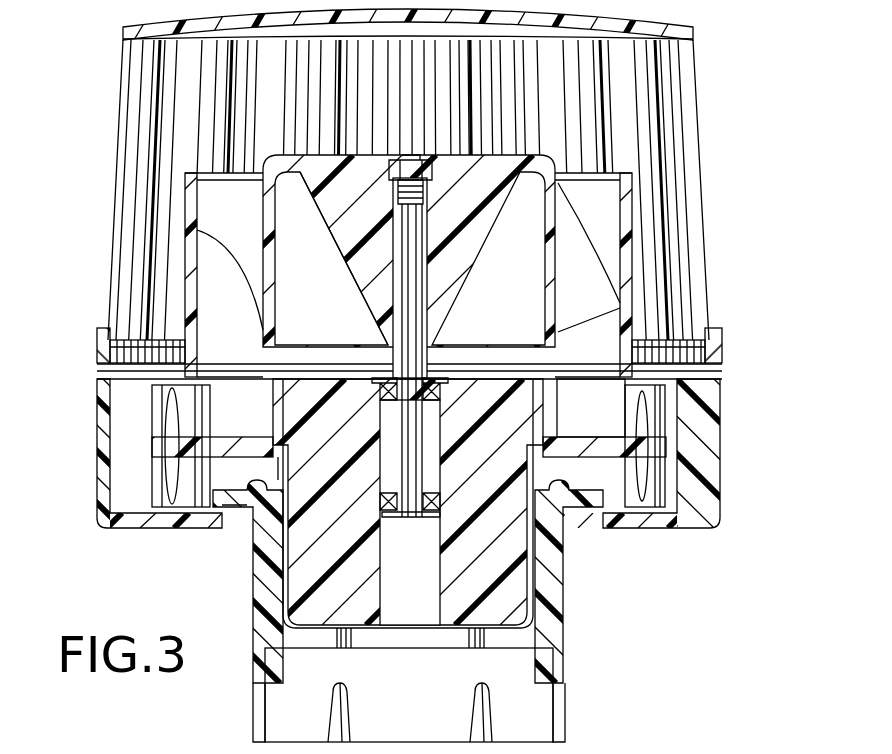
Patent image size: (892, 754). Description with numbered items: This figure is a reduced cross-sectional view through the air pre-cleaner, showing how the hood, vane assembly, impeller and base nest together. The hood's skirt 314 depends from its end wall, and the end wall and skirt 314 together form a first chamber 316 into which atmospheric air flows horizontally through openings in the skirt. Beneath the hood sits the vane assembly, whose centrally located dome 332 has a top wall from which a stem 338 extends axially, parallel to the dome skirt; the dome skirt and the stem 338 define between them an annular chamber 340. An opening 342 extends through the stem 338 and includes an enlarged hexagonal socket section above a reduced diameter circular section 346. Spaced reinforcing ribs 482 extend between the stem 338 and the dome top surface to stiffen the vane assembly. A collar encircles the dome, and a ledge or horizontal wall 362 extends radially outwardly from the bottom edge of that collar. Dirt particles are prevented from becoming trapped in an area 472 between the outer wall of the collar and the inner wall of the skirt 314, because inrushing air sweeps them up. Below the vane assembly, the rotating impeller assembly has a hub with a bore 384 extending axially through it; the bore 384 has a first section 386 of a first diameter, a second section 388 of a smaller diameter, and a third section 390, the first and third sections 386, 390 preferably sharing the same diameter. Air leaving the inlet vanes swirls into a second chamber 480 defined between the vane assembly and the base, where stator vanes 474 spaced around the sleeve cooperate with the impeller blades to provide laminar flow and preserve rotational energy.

The skirt 314 is at (118, 287).
The first chamber 316 is at (645, 152).
The dome 332 is at (548, 292).
The stem 338 is at (433, 362).
The annular chamber 340 is at (446, 265).
The opening 342 is at (405, 295).
The reduced diameter circular section 346 is at (412, 258).
The horizontal wall 362 is at (100, 352).
The bore 384 is at (442, 436).
The first section 386 is at (468, 378).
The second section 388 is at (385, 440).
The third section 390 is at (382, 502).
The area 472 is at (675, 345).
The stator vanes 474 is at (473, 647).
The second chamber 480 is at (602, 420).
The reinforcing ribs 482 is at (370, 292).